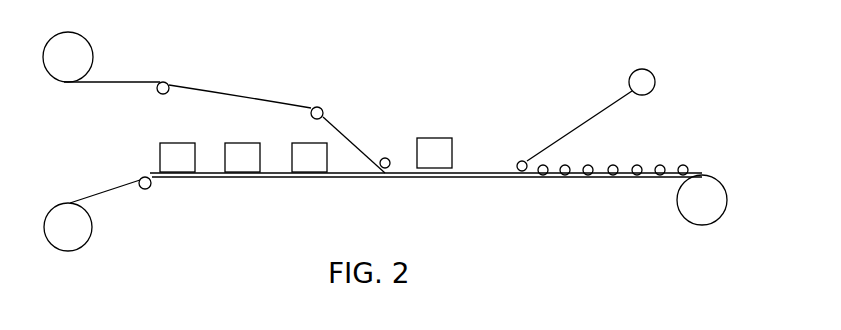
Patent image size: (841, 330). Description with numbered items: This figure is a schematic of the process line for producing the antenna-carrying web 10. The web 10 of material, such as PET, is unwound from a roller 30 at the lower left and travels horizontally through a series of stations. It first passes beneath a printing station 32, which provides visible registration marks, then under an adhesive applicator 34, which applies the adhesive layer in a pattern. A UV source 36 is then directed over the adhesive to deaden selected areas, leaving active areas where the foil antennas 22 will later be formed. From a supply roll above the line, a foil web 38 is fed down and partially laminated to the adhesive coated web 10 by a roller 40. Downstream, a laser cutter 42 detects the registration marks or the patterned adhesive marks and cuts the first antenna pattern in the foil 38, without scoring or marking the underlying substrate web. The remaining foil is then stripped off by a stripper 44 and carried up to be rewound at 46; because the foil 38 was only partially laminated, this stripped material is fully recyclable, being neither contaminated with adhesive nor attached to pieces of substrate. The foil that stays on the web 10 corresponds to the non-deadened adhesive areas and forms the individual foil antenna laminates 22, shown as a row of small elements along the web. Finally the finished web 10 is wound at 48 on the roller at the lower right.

The web 10 is at (105, 190).
The foil antennas 22 is at (590, 165).
The roller 30 is at (68, 251).
The printing station 32 is at (182, 143).
The adhesive applicator 34 is at (247, 143).
The UV source 36 is at (309, 143).
The foil web 38 is at (123, 79).
The roller 40 is at (388, 158).
The laser cutter 42 is at (431, 138).
The stripper 44 is at (518, 161).
The rewind 46 is at (656, 83).
The wind-up 48 is at (590, 113).